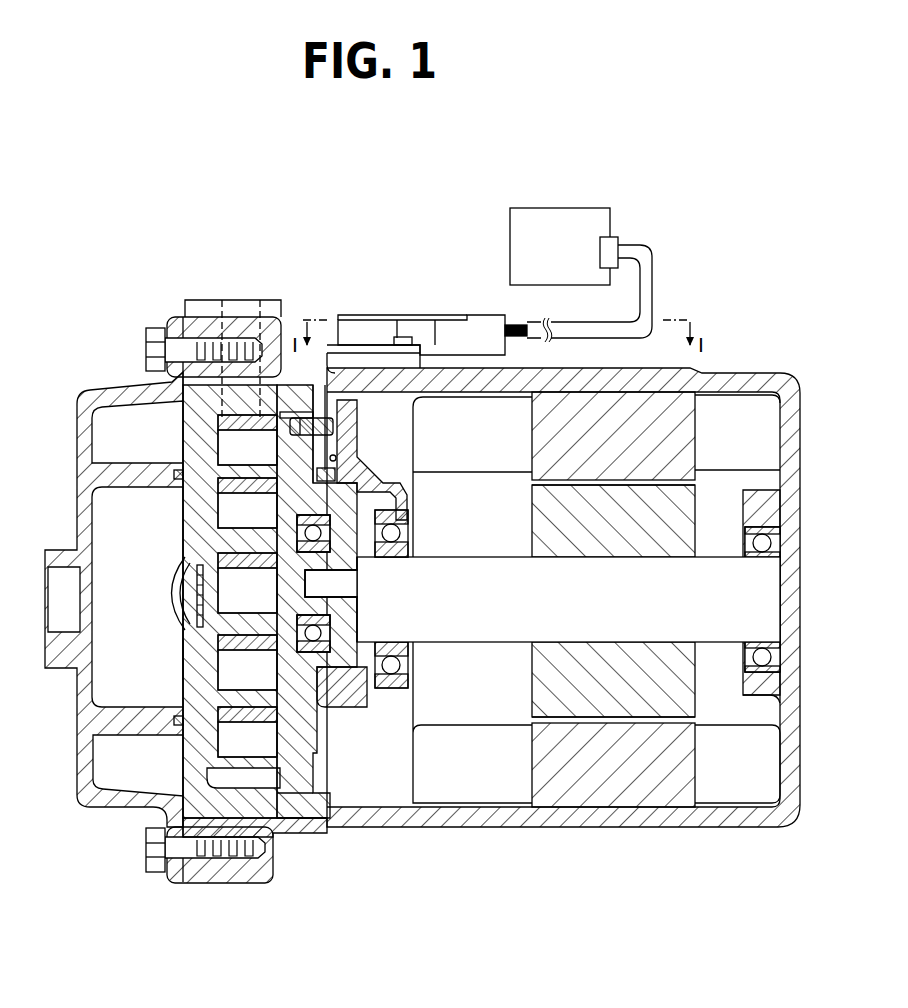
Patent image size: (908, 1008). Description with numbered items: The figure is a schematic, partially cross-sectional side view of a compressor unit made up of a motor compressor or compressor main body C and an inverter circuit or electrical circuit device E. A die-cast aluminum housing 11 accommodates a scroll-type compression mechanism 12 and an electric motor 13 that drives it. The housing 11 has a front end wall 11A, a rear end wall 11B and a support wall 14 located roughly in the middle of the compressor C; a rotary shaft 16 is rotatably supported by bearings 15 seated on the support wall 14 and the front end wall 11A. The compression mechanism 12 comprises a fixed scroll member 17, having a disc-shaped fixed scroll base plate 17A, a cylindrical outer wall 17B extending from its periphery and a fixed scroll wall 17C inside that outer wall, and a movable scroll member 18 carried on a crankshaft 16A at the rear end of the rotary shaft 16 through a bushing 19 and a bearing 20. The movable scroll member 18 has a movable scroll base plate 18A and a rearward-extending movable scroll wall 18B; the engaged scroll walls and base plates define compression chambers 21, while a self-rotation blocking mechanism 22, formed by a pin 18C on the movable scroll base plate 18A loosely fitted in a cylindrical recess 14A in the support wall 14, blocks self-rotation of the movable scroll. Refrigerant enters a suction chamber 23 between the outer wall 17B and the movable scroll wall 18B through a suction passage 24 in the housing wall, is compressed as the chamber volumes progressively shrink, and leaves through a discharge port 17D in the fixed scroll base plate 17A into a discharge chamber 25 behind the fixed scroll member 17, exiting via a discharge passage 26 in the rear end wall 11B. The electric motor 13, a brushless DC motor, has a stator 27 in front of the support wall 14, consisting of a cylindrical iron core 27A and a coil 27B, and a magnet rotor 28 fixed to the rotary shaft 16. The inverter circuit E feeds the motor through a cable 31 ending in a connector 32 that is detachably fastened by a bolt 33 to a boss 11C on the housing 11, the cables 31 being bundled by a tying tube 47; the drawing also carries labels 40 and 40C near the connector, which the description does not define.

The compressor main body C is at (108, 282).
The inverter circuit E is at (510, 216).
The housing 11 is at (107, 385).
The front end wall 11A is at (796, 580).
The rear end wall 11B is at (80, 507).
The boss 11C is at (413, 360).
The compression mechanism 12 is at (296, 808).
The electric motor 13 is at (768, 715).
The support wall 14 is at (377, 467).
The cylindrical recess 14A is at (336, 456).
The bearings 15 is at (748, 658).
The rotary shaft 16 is at (504, 643).
The crankshaft 16A is at (347, 575).
The fixed scroll member 17 is at (184, 648).
The fixed scroll base plate 17A is at (190, 672).
The cylindrical outer wall 17B is at (294, 833).
The fixed scroll wall 17C is at (270, 750).
The discharge port 17D is at (198, 606).
The movable scroll member 18 is at (318, 725).
The movable scroll base plate 18A is at (332, 748).
The movable scroll wall 18B is at (274, 652).
The pin 18C is at (346, 400).
The bushing 19 is at (352, 697).
The bearing 20 is at (292, 524).
The compression chambers 21 is at (268, 602).
The self-rotation blocking mechanism 22 is at (322, 447).
The suction chamber 23 is at (247, 447).
The suction passage 24 is at (263, 298).
The discharge chamber 25 is at (150, 539).
The discharge passage 26 is at (62, 577).
The stator 27 is at (578, 599).
The cylindrical iron core 27A is at (534, 430).
The coil 27B is at (483, 474).
The rotor 28 is at (536, 521).
The cable 31 is at (518, 328).
The connector 32 is at (420, 318).
The bolt 33 is at (401, 336).
The rotation sensor 40 is at (486, 332).
The sensor cover 40C is at (364, 320).
The tying tube 47 is at (578, 330).